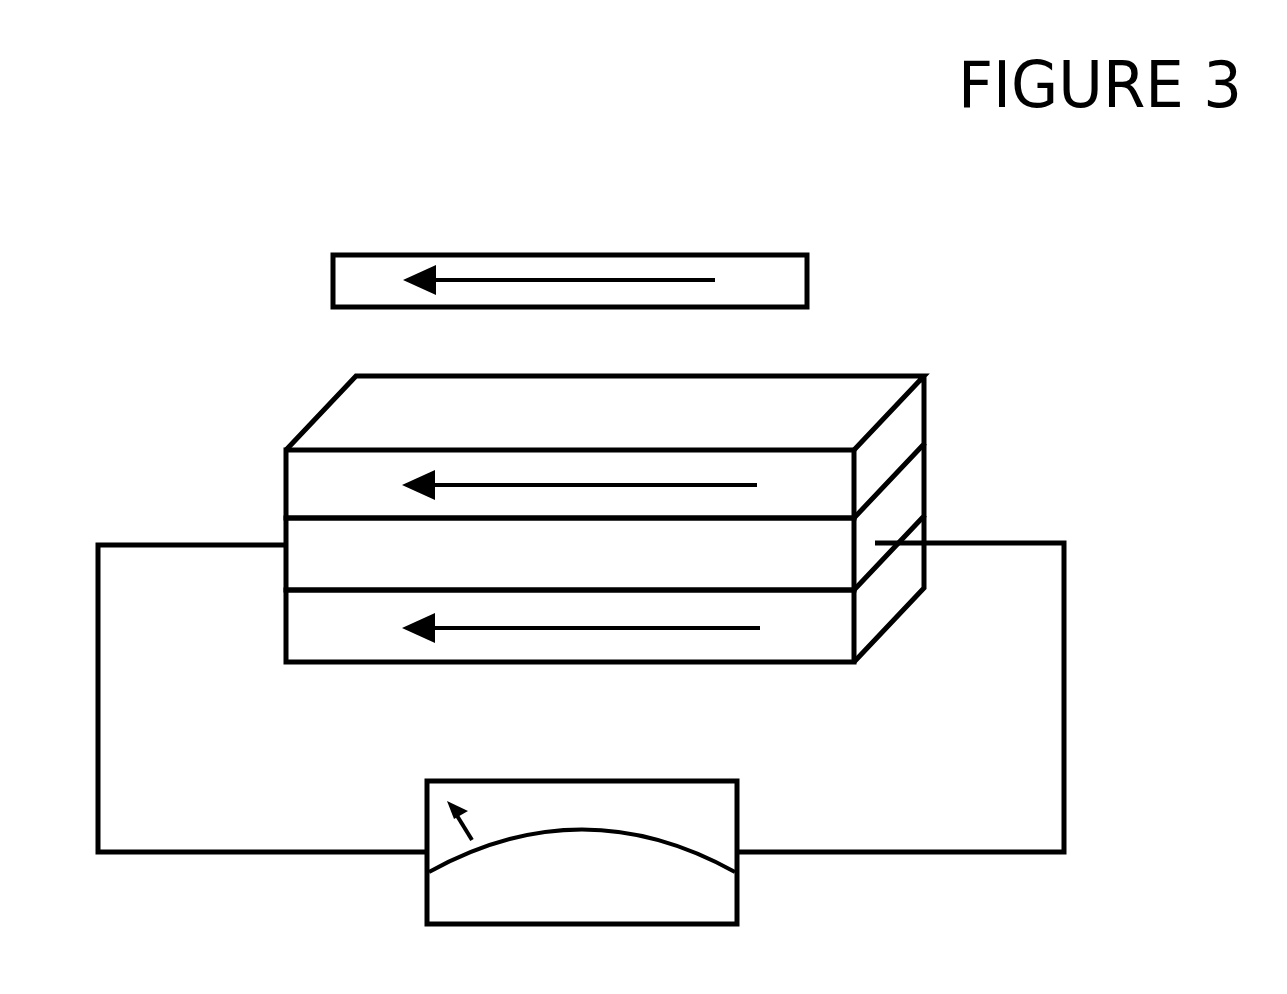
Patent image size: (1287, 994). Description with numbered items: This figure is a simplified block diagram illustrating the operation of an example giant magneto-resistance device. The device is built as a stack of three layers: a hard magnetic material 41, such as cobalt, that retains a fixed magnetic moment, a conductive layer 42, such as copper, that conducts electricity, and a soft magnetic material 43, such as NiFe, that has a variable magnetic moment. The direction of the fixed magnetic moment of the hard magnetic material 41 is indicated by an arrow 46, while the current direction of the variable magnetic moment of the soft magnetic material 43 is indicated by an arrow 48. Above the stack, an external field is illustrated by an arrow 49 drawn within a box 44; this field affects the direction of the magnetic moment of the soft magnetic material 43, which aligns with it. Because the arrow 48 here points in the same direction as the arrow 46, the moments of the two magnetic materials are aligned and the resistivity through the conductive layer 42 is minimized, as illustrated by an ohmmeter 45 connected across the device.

The hard magnetic material 41 is at (926, 581).
The conductive layer 42 is at (926, 485).
The soft magnetic material 43 is at (926, 414).
The box 44 is at (810, 273).
The ohmmeter 45 is at (740, 893).
The arrow 46 is at (762, 629).
The arrow 48 is at (762, 488).
The arrow 49 is at (627, 278).